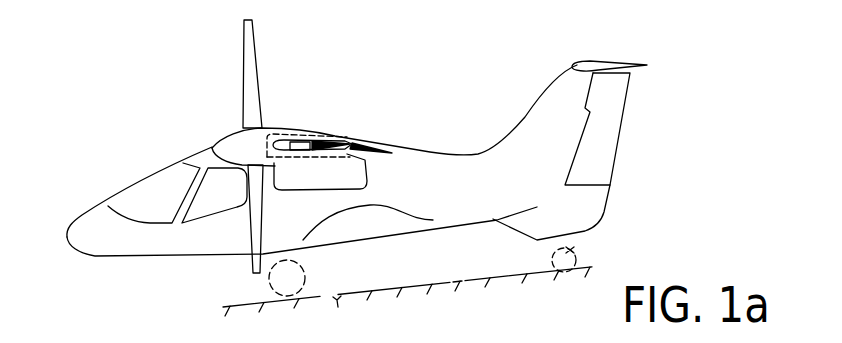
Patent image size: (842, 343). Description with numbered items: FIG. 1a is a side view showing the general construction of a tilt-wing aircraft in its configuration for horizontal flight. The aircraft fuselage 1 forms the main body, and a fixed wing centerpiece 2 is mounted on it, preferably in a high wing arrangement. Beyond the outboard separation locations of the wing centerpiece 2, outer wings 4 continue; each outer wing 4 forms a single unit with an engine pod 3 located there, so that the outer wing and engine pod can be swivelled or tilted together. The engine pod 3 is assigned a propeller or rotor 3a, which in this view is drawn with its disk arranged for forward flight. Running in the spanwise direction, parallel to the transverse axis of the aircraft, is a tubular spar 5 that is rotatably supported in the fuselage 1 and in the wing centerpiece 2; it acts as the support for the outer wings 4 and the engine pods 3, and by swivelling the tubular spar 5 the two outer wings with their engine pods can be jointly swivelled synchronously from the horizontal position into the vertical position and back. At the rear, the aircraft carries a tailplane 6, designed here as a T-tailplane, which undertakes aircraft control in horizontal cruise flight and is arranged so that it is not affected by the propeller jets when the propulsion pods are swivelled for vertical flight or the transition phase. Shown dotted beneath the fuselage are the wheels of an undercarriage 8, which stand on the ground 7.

The aircraft fuselage 1 is at (418, 168).
The wing centerpiece 2 is at (281, 127).
The engine pod 3 is at (302, 180).
The propeller or rotor 3a is at (243, 97).
The outer wing 4 is at (337, 143).
The tubular spar 5 is at (308, 140).
The tailplane 6 is at (592, 63).
The ground 7 is at (339, 309).
The undercarriage 8 is at (270, 290).